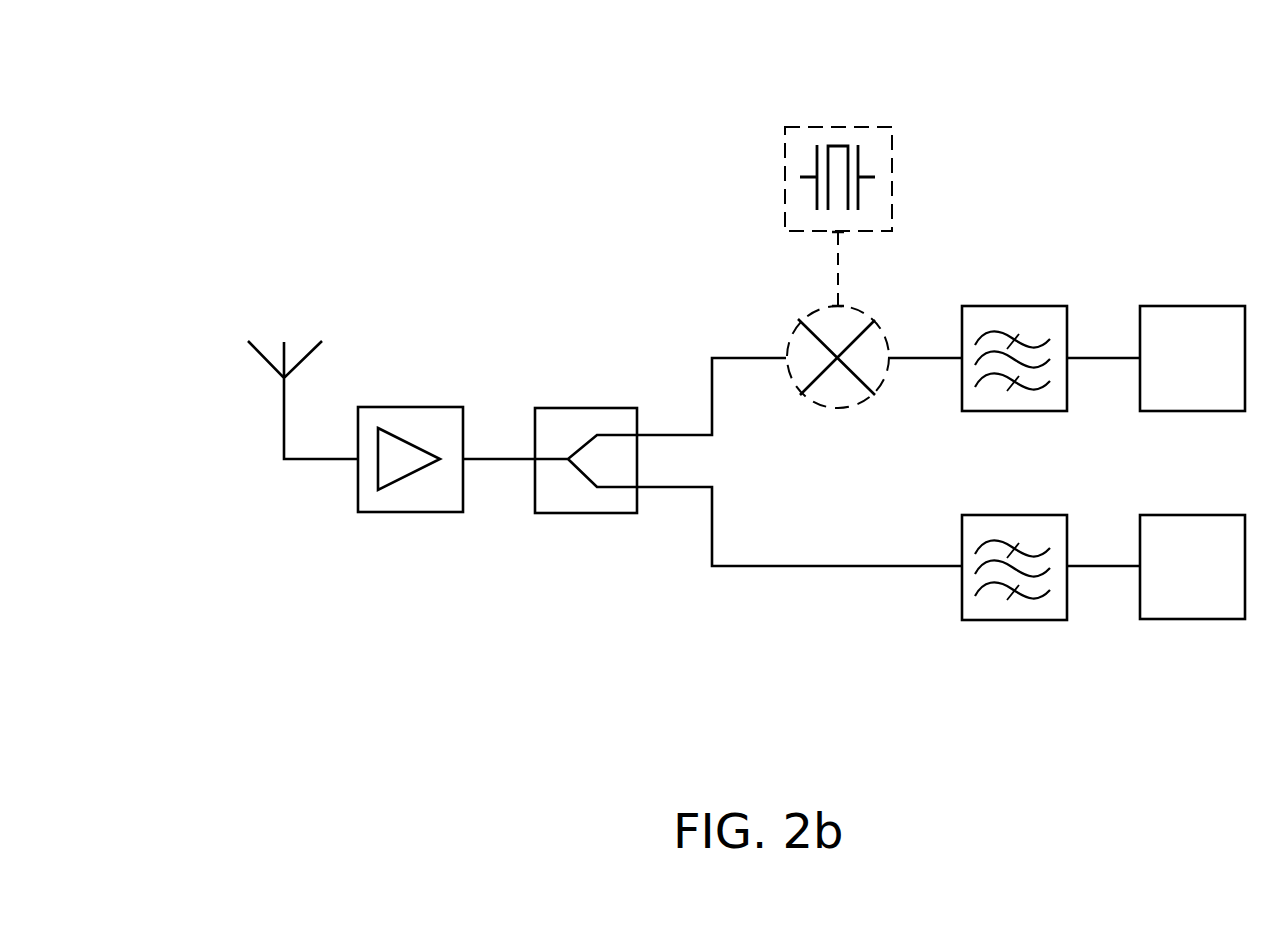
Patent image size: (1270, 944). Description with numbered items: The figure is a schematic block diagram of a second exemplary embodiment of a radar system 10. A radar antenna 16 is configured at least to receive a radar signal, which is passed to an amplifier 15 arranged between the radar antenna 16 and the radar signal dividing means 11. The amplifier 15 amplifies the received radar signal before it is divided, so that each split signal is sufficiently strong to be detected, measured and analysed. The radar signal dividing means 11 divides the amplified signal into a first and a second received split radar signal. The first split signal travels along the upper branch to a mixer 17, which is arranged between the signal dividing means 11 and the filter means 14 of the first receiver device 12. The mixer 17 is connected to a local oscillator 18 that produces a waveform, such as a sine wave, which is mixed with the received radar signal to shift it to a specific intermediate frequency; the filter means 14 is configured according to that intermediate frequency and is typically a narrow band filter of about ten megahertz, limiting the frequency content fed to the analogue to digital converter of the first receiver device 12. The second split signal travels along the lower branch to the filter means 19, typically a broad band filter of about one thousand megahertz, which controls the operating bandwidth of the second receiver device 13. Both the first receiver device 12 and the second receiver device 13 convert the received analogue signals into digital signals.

The radar system 10 is at (420, 208).
The radar signal dividing means 11 is at (582, 408).
The first receiver device 12 is at (1187, 306).
The second receiver device 13 is at (1187, 619).
The filter means 14 is at (1010, 306).
The amplifier 15 is at (406, 407).
The radar antenna 16 is at (262, 357).
The mixer 17 is at (792, 330).
The local oscillator 18 is at (835, 127).
The filter means 19 is at (1010, 619).